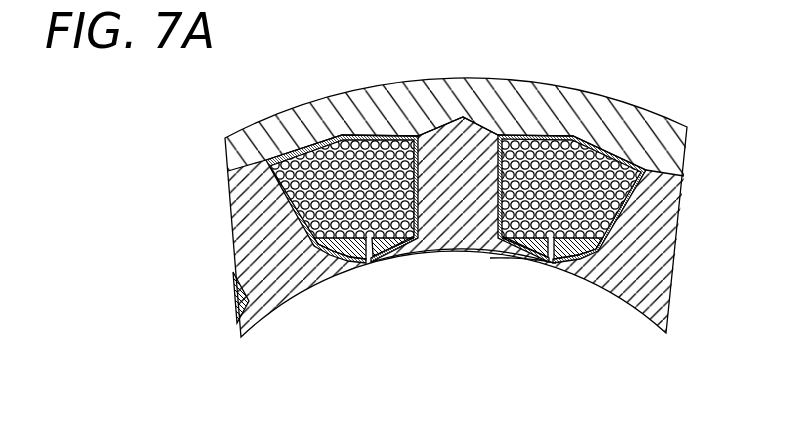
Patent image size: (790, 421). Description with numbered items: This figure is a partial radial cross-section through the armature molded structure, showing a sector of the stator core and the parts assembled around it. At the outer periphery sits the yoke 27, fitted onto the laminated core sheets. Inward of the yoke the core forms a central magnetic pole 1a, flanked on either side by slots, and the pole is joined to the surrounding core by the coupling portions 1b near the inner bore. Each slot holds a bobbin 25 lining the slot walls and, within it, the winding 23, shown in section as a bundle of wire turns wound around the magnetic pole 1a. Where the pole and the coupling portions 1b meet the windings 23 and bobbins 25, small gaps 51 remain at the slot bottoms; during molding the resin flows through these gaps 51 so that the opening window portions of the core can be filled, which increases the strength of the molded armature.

The magnetic pole 1a is at (459, 160).
The coupling portion 1b is at (543, 264).
The winding 23 is at (377, 141).
The bobbin 25 is at (418, 157).
The yoke 27 is at (622, 107).
The gap 51 is at (368, 264).